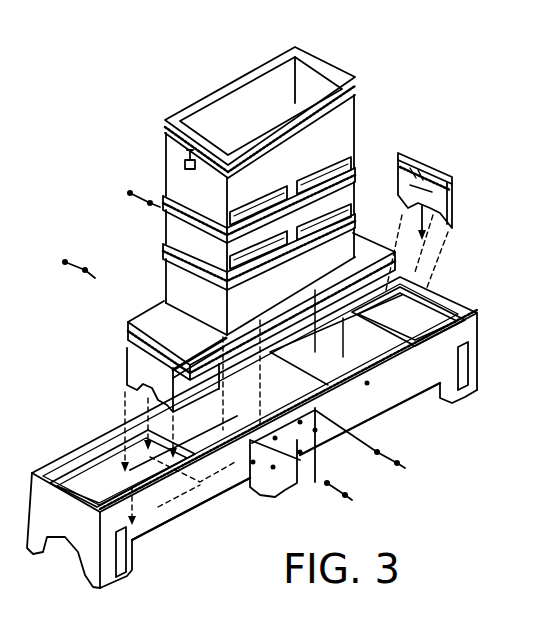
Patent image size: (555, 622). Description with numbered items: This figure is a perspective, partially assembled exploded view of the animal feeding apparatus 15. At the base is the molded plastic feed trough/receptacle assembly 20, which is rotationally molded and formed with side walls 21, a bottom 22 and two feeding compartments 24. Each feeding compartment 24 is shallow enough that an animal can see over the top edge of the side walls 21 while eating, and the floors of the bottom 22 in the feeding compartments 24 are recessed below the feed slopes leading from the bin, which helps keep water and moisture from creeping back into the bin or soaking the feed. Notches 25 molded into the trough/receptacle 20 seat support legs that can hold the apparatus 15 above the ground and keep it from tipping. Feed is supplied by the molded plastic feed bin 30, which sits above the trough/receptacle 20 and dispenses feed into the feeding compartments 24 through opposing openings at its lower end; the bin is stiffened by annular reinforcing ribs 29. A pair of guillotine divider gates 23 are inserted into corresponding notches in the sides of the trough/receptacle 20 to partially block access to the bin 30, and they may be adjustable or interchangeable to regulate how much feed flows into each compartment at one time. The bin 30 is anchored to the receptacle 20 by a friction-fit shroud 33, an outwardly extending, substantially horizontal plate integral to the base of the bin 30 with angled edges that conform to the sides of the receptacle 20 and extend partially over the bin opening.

The apparatus 15 is at (148, 85).
The feed trough/receptacle assembly 20 is at (480, 323).
The side walls 21 is at (383, 397).
The bottom 22 is at (157, 507).
The guillotine divider gates 23 is at (452, 190).
The feeding compartments 24 is at (360, 338).
The notches 25 is at (462, 365).
The annular reinforcing ribs 29 is at (167, 200).
The feed bin 30 is at (352, 120).
The shroud 33 is at (147, 307).